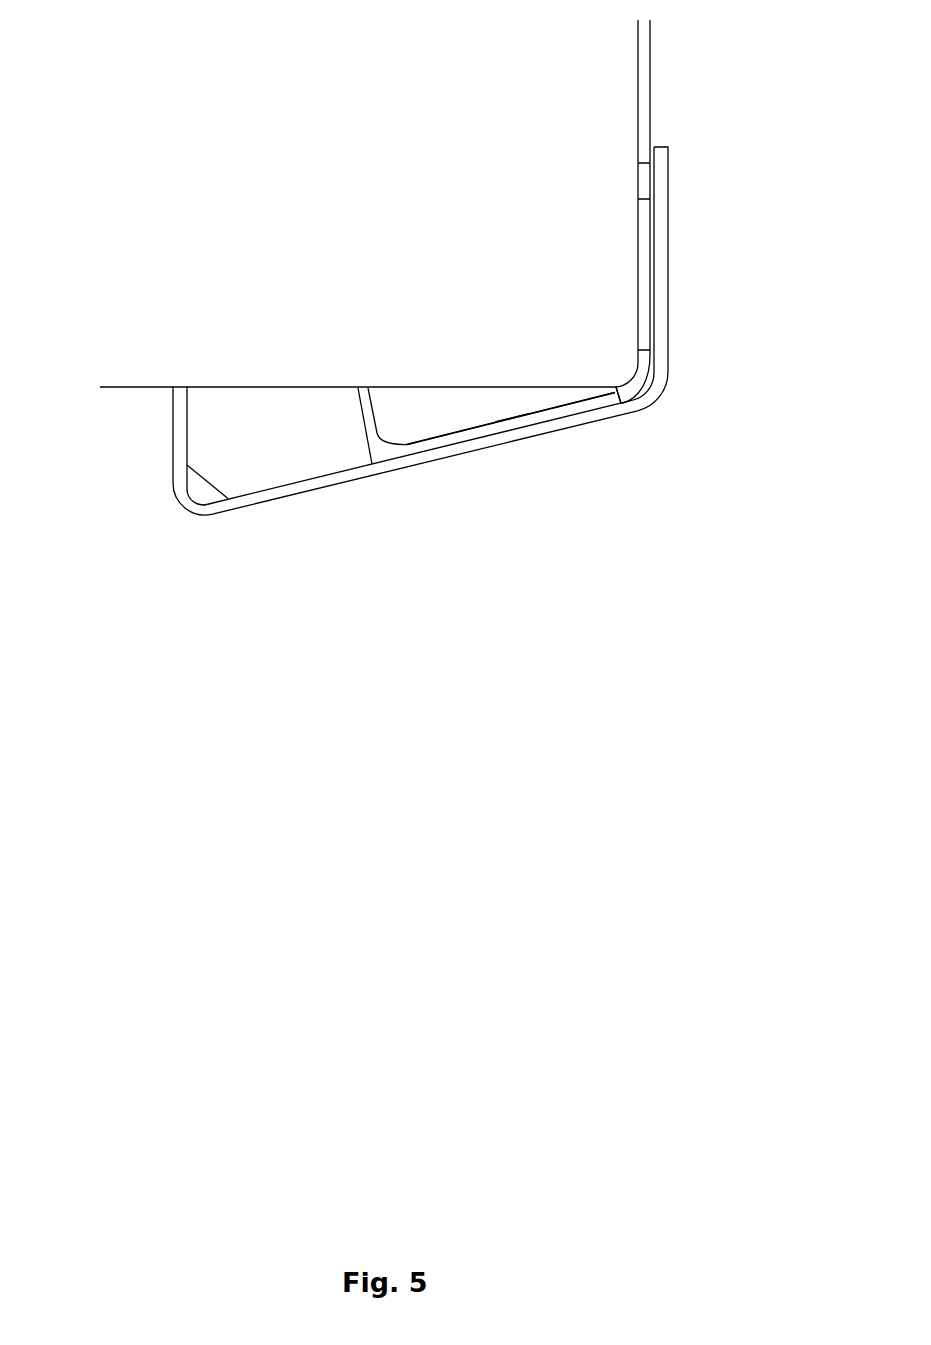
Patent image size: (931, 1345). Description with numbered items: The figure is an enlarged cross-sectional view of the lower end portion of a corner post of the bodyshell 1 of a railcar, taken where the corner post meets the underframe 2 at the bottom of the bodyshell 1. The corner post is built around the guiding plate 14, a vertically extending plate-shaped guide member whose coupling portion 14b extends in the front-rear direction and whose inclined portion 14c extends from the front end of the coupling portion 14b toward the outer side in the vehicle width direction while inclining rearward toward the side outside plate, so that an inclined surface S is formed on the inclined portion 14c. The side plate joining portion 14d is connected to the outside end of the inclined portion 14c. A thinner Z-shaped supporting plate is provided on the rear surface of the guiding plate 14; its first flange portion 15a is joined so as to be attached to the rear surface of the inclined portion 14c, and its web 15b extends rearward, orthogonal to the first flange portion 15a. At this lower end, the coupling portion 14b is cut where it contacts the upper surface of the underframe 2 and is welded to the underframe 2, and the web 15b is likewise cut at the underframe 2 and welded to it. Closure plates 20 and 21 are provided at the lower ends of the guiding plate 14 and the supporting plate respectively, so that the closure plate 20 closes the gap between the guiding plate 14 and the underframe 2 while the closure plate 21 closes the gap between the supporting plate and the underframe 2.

The bodyshell 1 is at (421, 314).
The underframe 2 is at (416, 213).
The guiding plate 14 is at (421, 366).
The coupling portion 14b is at (175, 430).
The inclined portion 14c is at (320, 487).
The side plate joining portion 14d is at (664, 273).
The first flange portion 15a is at (508, 420).
The web 15b is at (356, 413).
The closure plate 20 is at (258, 480).
The closure plate 21 is at (468, 420).
The inclined surface S is at (527, 440).